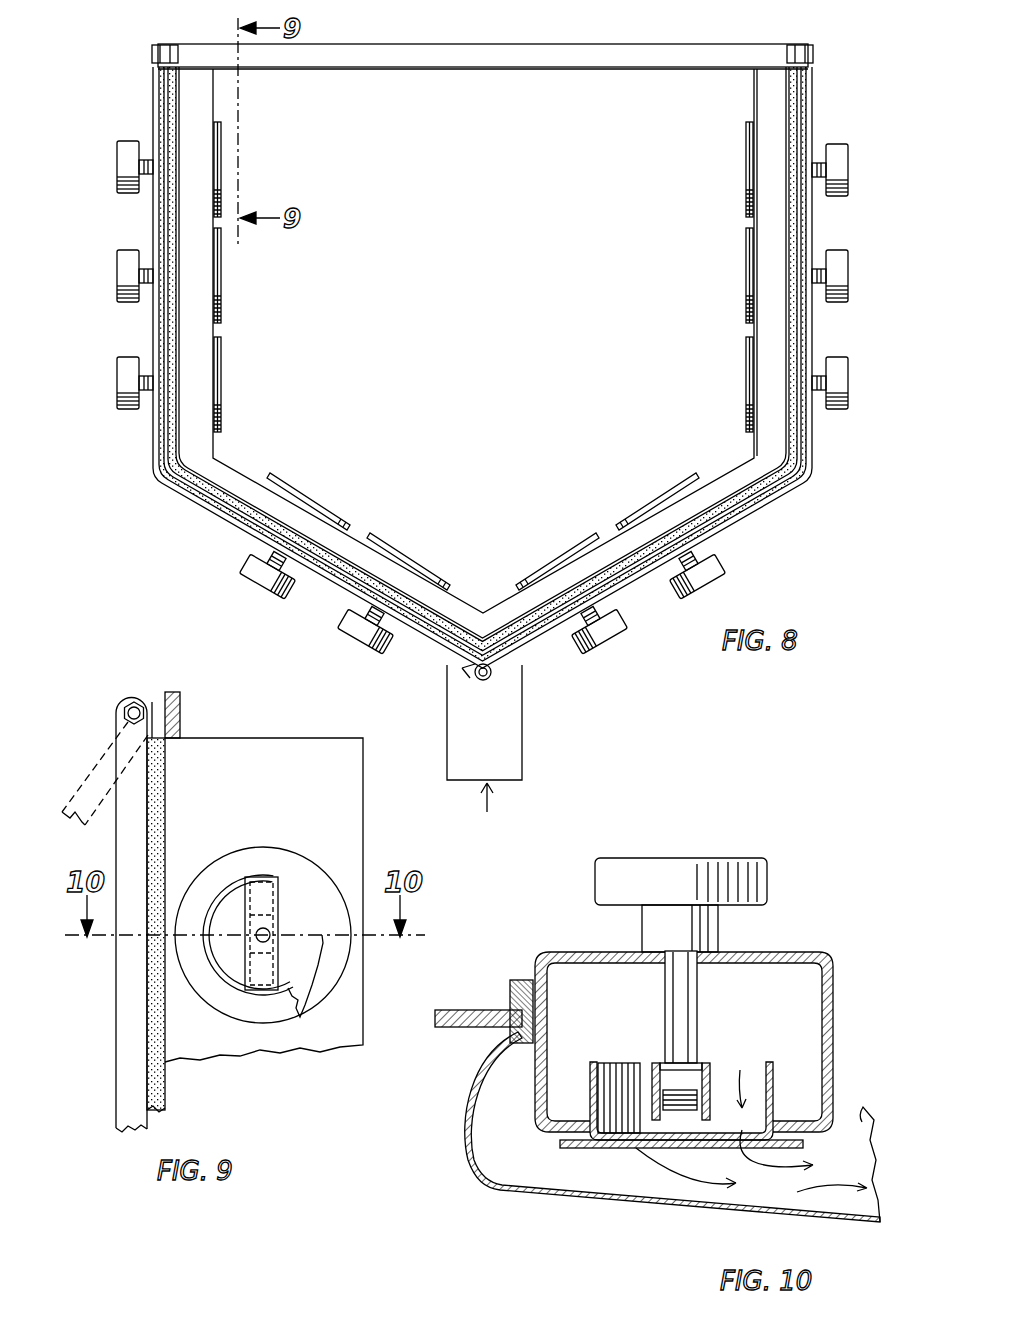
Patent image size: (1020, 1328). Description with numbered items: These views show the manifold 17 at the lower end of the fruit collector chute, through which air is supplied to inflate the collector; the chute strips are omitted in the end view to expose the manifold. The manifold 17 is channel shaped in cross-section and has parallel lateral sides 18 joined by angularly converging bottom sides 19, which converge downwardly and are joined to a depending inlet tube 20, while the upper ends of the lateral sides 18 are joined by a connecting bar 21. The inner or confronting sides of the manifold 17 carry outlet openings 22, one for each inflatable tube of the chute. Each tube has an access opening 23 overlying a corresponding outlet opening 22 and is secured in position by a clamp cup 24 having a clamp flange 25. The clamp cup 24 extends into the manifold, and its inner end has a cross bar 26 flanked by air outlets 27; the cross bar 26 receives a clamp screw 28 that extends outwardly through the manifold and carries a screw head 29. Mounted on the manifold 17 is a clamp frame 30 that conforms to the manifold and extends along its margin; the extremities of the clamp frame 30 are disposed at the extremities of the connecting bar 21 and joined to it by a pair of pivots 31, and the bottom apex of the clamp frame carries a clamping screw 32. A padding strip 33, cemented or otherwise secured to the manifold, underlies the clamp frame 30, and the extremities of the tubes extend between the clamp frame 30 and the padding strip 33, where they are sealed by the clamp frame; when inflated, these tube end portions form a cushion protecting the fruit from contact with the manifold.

In FIG. 8, the manifold 17 is at (140, 96).
In FIG. 9, the manifold 17 is at (365, 823).
In FIG. 8, the lateral sides 18 is at (755, 88).
In FIG. 8, the bottom sides 19 is at (348, 540).
In FIG. 8, the inlet tube 20 is at (524, 735).
In FIG. 8, the connecting bar 21 is at (575, 58).
In FIG. 9, the connecting bar 21 is at (180, 706).
In FIG. 9, the outlet openings 22 is at (310, 968).
In FIG. 10, the outlet openings 22 is at (766, 1130).
In FIG. 10, the access opening 23 is at (748, 1150).
In FIG. 10, the clamp cup 24 is at (597, 1068).
In FIG. 8, the clamp flange 25 is at (220, 193).
In FIG. 9, the clamp flange 25 is at (273, 856).
In FIG. 10, the clamp flange 25 is at (578, 1149).
In FIG. 9, the cross bar 26 is at (263, 965).
In FIG. 10, the cross bar 26 is at (707, 1060).
In FIG. 9, the air outlets 27 is at (299, 904).
In FIG. 10, the air outlets 27 is at (622, 1072).
In FIG. 10, the clamp screw 28 is at (697, 1012).
In FIG. 8, the screw head 29 is at (131, 194).
In FIG. 10, the screw head 29 is at (743, 862).
In FIG. 8, the clamp frame 30 is at (160, 104).
In FIG. 9, the clamp frame 30 is at (116, 1055).
In FIG. 10, the clamp frame 30 is at (462, 1007).
In FIG. 8, the pivots 31 is at (158, 48).
In FIG. 9, the pivots 31 is at (148, 696).
In FIG. 8, the clamping screw 32 is at (473, 676).
In FIG. 8, the padding strip 33 is at (172, 188).
In FIG. 9, the padding strip 33 is at (170, 1084).
In FIG. 10, the padding strip 33 is at (526, 978).